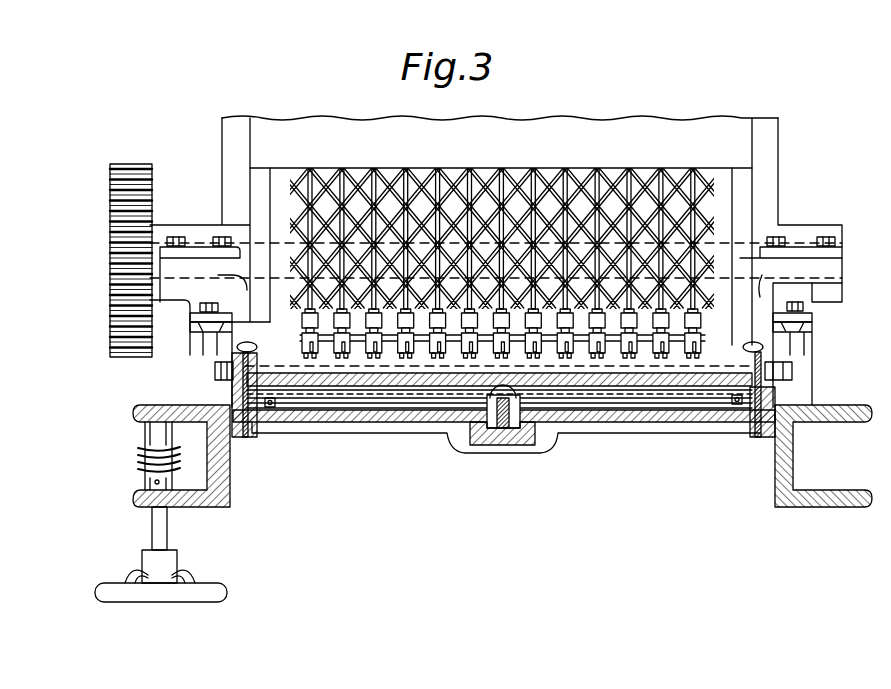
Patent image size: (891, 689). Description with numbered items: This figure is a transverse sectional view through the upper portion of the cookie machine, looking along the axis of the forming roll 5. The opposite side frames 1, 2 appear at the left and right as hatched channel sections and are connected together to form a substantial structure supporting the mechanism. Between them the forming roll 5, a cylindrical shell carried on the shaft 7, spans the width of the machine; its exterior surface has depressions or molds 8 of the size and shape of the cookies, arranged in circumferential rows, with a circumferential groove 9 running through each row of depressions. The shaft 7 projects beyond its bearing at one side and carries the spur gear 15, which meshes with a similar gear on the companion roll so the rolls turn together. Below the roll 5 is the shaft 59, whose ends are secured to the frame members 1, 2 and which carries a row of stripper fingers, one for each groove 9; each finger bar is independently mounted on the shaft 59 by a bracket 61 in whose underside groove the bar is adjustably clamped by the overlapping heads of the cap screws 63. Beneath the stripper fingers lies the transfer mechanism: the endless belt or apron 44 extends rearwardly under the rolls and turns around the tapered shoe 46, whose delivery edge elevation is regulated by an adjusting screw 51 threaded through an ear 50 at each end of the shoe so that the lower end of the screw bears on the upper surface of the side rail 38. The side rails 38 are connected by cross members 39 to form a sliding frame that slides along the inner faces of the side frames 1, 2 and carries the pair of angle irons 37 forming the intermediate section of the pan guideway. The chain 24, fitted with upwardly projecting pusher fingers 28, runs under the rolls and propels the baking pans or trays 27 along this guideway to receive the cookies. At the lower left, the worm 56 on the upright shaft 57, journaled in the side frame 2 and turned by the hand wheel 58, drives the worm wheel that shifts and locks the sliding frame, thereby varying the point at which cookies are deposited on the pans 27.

The side frame 1 is at (794, 462).
The side frame 2 is at (231, 490).
The forming roll 5 is at (273, 172).
The shaft 7 is at (843, 270).
The depressions or molds 8 is at (498, 183).
The circumferential groove 9 is at (408, 170).
The spur gear 15 is at (112, 333).
The chain 24 is at (501, 430).
The baking pans or trays 27 is at (362, 406).
The pusher fingers 28 is at (530, 440).
The angle irons 37 is at (272, 408).
The side rails 38 is at (228, 405).
The cross members 39 is at (415, 434).
The endless belt or apron 44 is at (668, 373).
The tapered shoe 46 is at (598, 382).
The ear 50 is at (228, 372).
The adjusting screw 51 is at (237, 347).
The worm 56 is at (140, 462).
The upright shaft 57 is at (155, 523).
The hand wheel 58 is at (216, 580).
The shaft 59 is at (788, 314).
The bracket 61 is at (303, 313).
The cap screws 63 is at (706, 352).